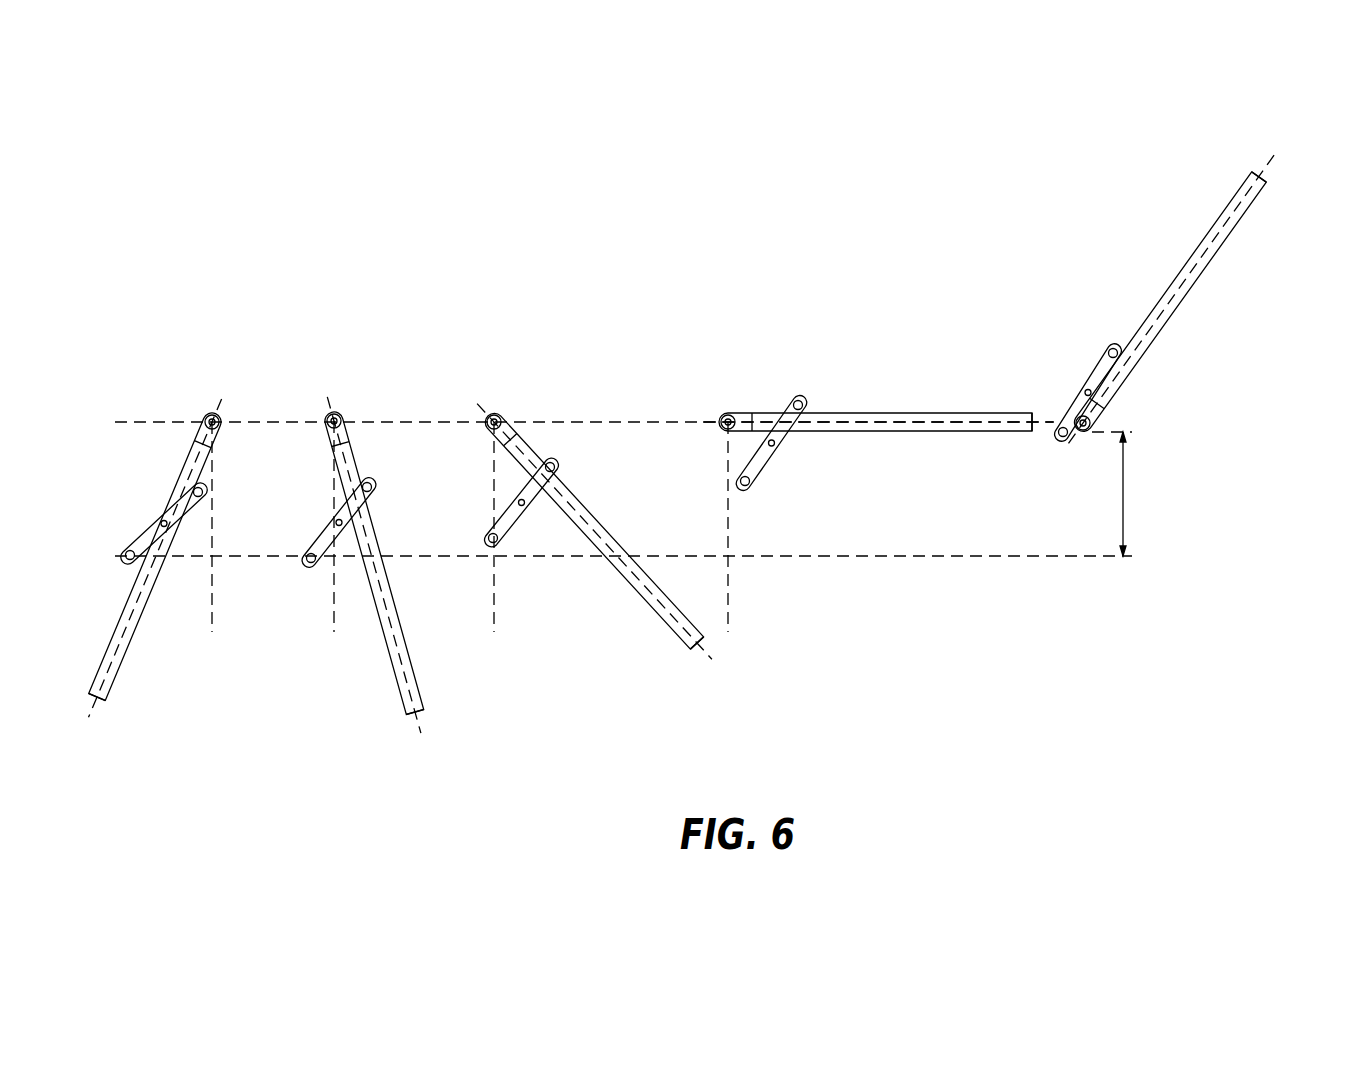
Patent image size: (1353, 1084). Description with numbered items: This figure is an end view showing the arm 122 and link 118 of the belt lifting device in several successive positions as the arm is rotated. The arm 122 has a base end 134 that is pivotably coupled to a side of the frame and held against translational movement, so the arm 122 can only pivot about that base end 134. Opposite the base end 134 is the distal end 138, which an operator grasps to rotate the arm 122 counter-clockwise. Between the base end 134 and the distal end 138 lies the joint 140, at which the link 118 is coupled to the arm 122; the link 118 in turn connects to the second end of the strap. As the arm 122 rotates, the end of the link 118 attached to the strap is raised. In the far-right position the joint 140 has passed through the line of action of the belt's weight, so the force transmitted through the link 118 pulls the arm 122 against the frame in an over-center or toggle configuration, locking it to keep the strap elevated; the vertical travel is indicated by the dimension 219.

The link 118 is at (131, 548).
The arm 122 is at (150, 650).
The base end 134 is at (212, 413).
The distal end 138 is at (106, 704).
The joint 140 is at (203, 489).
The vertical displacement 219 is at (1124, 492).